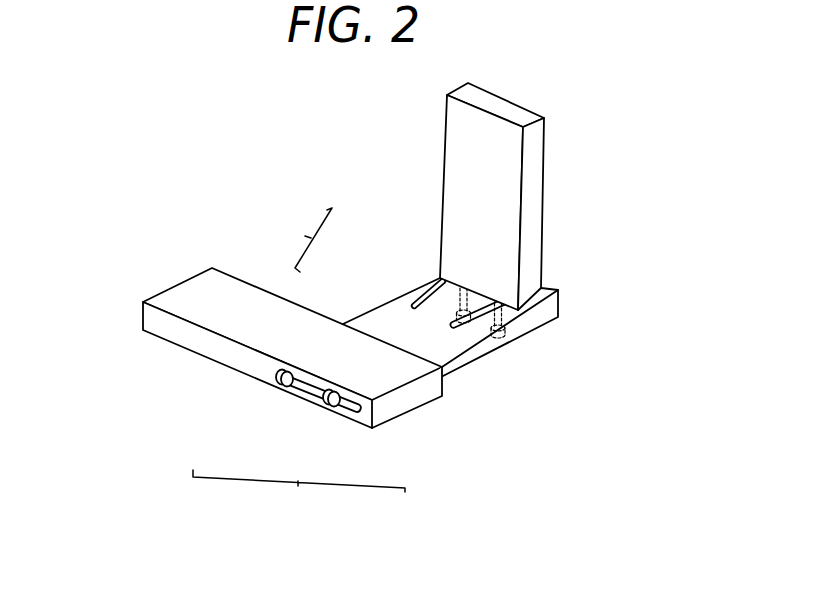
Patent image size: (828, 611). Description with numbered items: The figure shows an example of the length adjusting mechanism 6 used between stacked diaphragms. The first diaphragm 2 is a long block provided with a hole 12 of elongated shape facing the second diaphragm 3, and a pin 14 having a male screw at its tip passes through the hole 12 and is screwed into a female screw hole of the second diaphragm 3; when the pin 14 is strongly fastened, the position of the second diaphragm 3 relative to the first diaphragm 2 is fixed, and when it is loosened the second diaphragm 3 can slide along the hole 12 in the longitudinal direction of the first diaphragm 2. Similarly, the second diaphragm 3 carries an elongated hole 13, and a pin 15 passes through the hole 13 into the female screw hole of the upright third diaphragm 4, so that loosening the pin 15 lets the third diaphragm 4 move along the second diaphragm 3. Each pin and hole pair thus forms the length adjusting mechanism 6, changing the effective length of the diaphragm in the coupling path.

The first diaphragm 2 is at (182, 337).
The second diaphragm 3 is at (548, 310).
The third diaphragm 4 is at (467, 170).
The length adjusting mechanism 6 is at (299, 365).
The hole 12 is at (307, 392).
The hole 13 is at (403, 303).
The pin 14 is at (278, 384).
The pin 15 is at (437, 282).